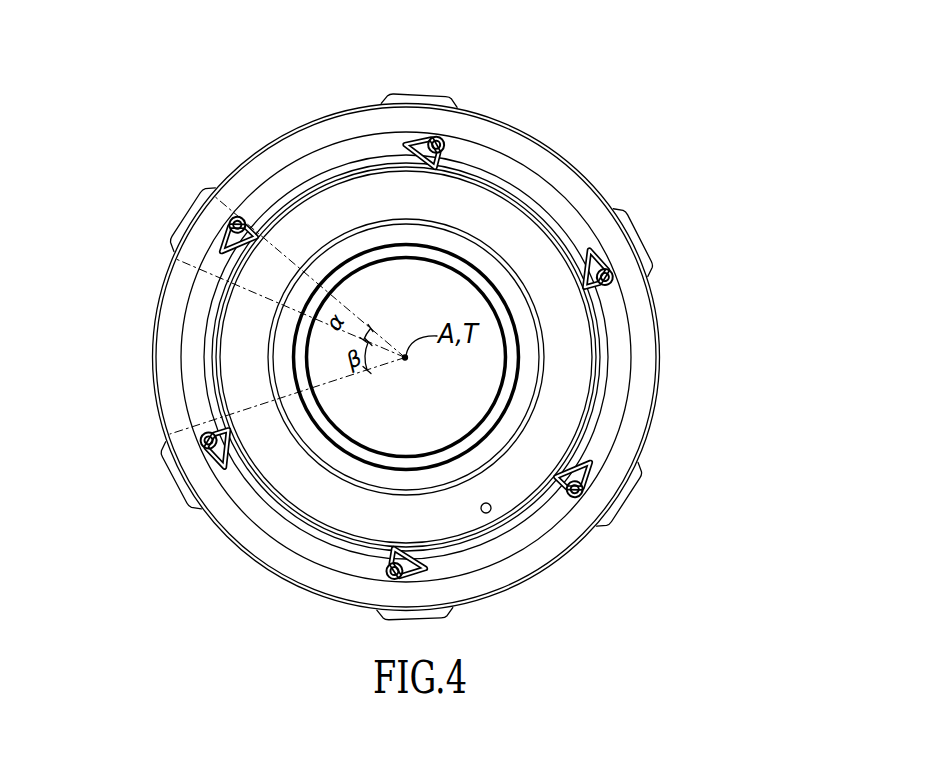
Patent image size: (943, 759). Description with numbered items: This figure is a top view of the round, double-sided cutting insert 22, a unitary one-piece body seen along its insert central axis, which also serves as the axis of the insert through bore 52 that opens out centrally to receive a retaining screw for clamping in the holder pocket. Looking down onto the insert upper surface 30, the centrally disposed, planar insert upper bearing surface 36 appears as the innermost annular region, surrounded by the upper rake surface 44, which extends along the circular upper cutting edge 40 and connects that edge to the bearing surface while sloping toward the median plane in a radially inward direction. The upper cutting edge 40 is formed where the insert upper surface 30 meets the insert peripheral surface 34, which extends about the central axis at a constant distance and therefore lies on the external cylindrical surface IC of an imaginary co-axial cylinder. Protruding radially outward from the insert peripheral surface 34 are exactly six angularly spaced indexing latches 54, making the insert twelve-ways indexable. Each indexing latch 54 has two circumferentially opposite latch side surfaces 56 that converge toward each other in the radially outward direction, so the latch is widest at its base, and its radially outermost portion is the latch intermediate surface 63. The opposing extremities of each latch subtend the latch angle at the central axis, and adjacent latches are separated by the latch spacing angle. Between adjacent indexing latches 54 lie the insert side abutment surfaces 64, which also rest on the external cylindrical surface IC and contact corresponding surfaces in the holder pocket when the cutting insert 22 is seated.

The cutting insert 22 is at (672, 158).
The insert upper surface 30 is at (515, 182).
The insert peripheral surface 34 is at (290, 130).
The insert upper bearing surface 36 is at (367, 190).
The upper cutting edge 40 is at (658, 326).
The upper rake surface 44 is at (575, 195).
The insert through bore 52 is at (438, 418).
The indexing latches 54 is at (430, 85).
The latch side surfaces 56 is at (214, 190).
The latch intermediate surface 63 is at (630, 502).
The insert side abutment surfaces 64 is at (510, 122).
The external cylindrical surface IC is at (578, 548).